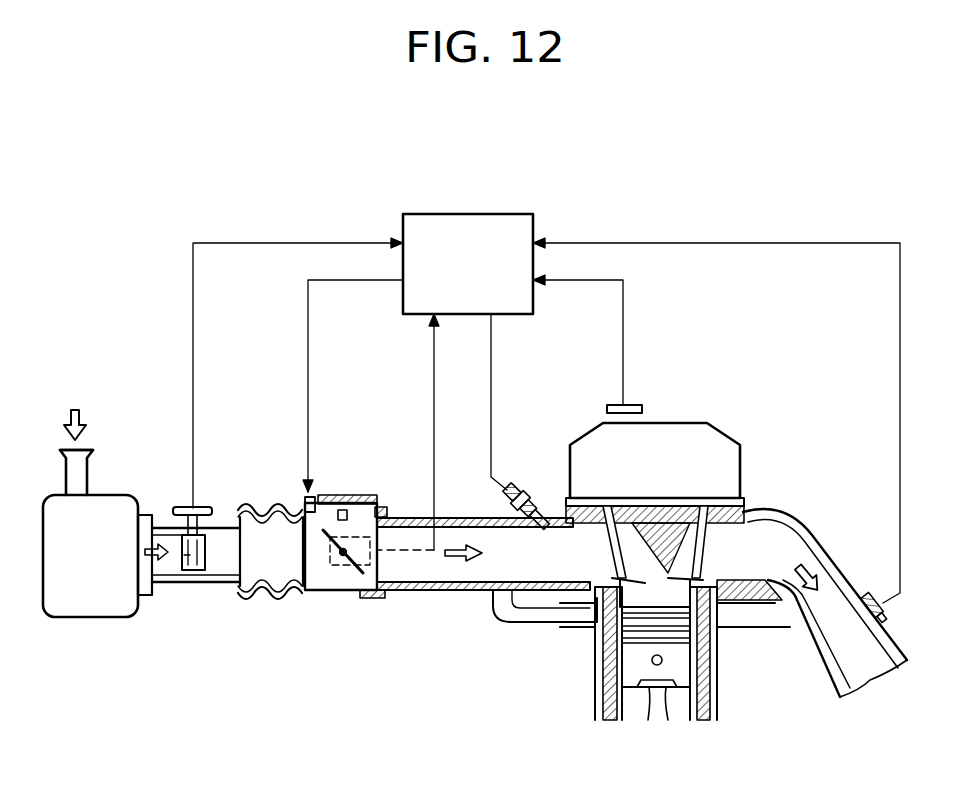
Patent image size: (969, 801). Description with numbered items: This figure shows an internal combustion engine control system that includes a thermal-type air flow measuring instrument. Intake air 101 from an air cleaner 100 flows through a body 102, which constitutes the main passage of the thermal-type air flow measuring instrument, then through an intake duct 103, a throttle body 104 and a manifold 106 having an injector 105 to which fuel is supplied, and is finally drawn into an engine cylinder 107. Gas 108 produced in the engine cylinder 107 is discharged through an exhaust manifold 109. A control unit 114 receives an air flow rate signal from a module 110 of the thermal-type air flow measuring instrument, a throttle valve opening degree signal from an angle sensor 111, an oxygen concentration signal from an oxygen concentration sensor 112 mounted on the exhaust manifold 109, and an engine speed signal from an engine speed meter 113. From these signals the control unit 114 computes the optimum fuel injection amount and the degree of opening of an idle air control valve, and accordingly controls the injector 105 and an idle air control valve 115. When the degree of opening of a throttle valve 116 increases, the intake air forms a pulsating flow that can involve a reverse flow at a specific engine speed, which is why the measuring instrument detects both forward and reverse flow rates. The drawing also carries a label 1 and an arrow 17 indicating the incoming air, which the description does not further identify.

The air 1 is at (91, 427).
The intake air flow arrow 17 is at (70, 412).
The air cleaner 100 is at (98, 620).
The intake air 101 is at (84, 415).
The body 102 is at (185, 597).
The intake duct 103 is at (245, 505).
The throttle body 104 is at (348, 590).
The injector 105 is at (512, 487).
The manifold 106 is at (408, 518).
The engine cylinder 107 is at (667, 597).
The gas 108 is at (812, 533).
The exhaust manifold 109 is at (820, 557).
The module 110 is at (187, 507).
The angle sensor 111 is at (333, 580).
The oxygen concentration sensor 112 is at (875, 600).
The engine speed meter 113 is at (645, 404).
The control unit 114 is at (518, 212).
The idle air control valve 115 is at (304, 492).
The throttle valve 116 is at (331, 503).